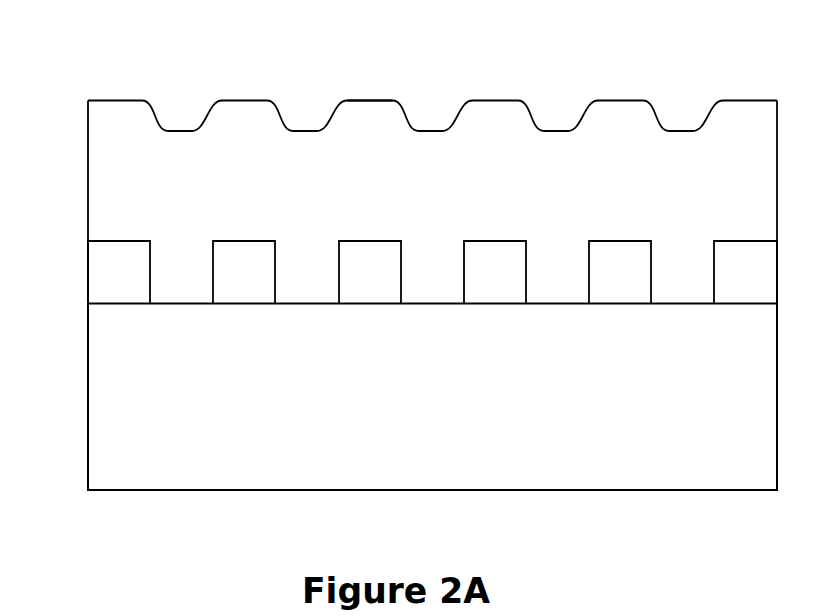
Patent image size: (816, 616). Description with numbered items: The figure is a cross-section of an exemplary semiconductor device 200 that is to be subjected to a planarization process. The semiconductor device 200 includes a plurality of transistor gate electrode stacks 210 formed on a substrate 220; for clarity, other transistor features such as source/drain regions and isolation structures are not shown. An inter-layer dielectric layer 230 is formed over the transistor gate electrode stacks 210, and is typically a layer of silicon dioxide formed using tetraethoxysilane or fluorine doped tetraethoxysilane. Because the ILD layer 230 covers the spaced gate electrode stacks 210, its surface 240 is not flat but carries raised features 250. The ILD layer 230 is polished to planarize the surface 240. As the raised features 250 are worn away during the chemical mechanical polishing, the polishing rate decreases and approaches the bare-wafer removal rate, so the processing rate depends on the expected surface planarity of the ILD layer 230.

The semiconductor device 200 is at (112, 58).
The transistor gate electrode stacks 210 is at (108, 242).
The substrate 220 is at (130, 392).
The inter-layer dielectric (ILD) layer 230 is at (103, 171).
The surface 240 is at (112, 100).
The raised features 250 is at (371, 80).